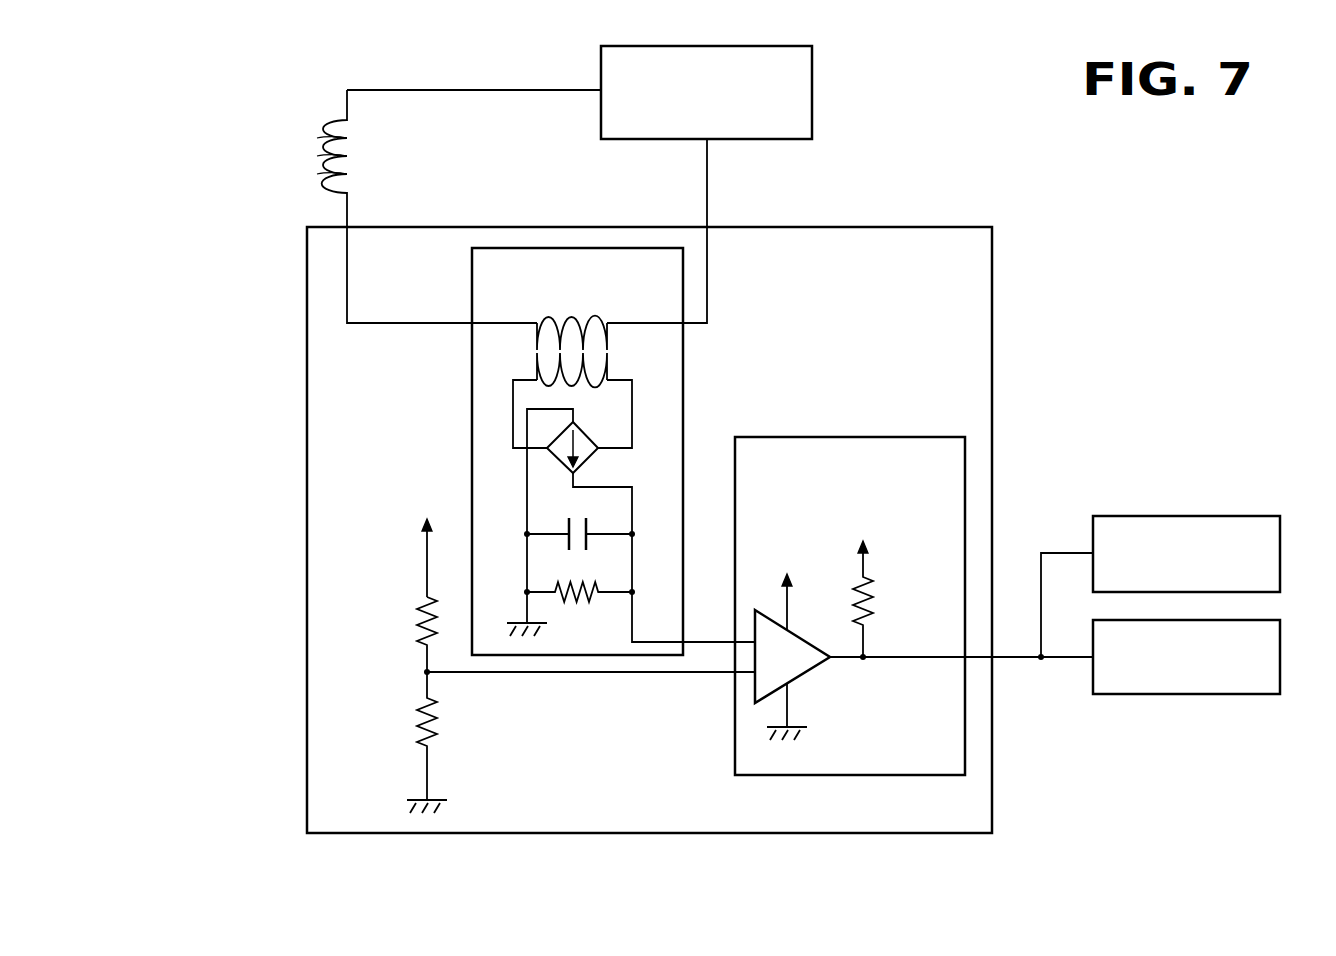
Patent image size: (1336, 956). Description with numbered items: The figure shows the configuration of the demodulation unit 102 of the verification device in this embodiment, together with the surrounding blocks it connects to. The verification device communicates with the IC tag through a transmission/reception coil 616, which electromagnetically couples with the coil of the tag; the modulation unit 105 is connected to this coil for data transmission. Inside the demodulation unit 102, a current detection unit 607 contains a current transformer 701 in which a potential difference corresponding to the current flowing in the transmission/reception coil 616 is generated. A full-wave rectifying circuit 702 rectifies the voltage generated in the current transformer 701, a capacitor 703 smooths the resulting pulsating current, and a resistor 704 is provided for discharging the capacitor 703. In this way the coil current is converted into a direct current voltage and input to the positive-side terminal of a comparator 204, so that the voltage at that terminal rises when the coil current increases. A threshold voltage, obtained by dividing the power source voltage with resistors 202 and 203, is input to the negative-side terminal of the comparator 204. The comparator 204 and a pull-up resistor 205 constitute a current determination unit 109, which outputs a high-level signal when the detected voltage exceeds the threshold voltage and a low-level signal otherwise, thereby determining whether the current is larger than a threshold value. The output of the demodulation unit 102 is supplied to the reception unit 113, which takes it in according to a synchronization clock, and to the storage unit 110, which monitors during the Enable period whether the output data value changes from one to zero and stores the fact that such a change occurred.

The transmission/reception coil 616 is at (256, 206).
The modulation unit 105 is at (814, 68).
The demodulation unit 102 is at (922, 227).
The current detection unit 607 is at (469, 272).
The current transformer 701 is at (605, 352).
The full-wave rectifying circuit 702 is at (580, 432).
The capacitor 703 is at (571, 516).
The resistor 704 is at (577, 606).
The resistor 202 is at (409, 621).
The resistor 203 is at (409, 716).
The current determination unit 109 is at (774, 437).
The comparator 204 is at (800, 680).
The resistor 205 is at (880, 603).
The reception unit 113 is at (1219, 516).
The storage unit 110 is at (1220, 694).